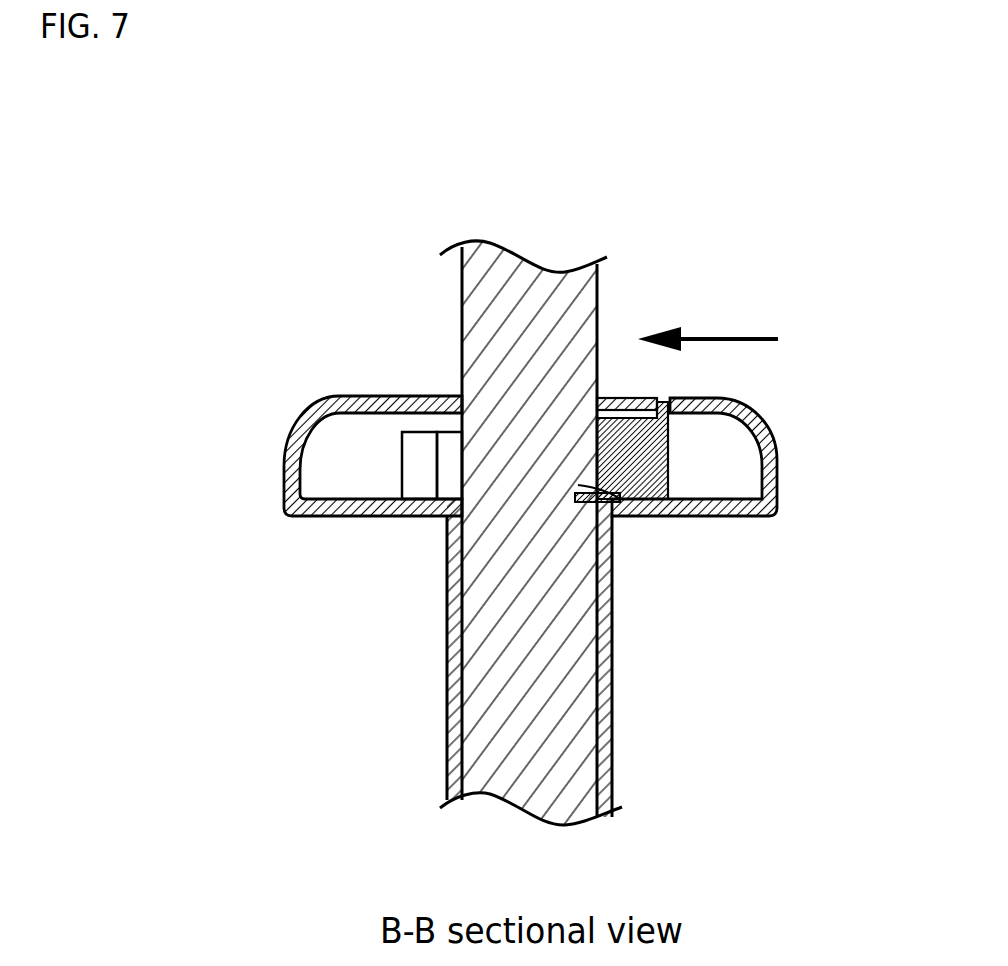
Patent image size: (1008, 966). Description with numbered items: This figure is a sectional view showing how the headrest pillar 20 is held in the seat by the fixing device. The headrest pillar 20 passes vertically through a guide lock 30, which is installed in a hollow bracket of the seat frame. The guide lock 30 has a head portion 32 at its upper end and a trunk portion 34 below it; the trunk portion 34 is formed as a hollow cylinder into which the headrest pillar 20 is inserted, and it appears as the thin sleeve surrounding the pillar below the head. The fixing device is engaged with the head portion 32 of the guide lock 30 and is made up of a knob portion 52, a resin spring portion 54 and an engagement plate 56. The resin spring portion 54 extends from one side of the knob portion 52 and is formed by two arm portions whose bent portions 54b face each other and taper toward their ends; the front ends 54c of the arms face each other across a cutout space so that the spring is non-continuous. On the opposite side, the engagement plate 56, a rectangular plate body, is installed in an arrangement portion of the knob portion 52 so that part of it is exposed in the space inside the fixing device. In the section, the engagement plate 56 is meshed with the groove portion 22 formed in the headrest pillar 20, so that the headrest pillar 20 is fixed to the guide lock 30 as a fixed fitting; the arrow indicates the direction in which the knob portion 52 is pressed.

The headrest pillar 20 is at (573, 713).
The groove portion 22 is at (578, 485).
The guide lock 30 is at (345, 606).
The head portion 32 is at (276, 467).
The trunk portion 34 is at (437, 602).
The knob portion 52 is at (788, 405).
The resin spring portion 54 is at (291, 322).
The bent portion 54b is at (413, 447).
The front end 54c is at (448, 450).
The engagement plate 56 is at (616, 500).